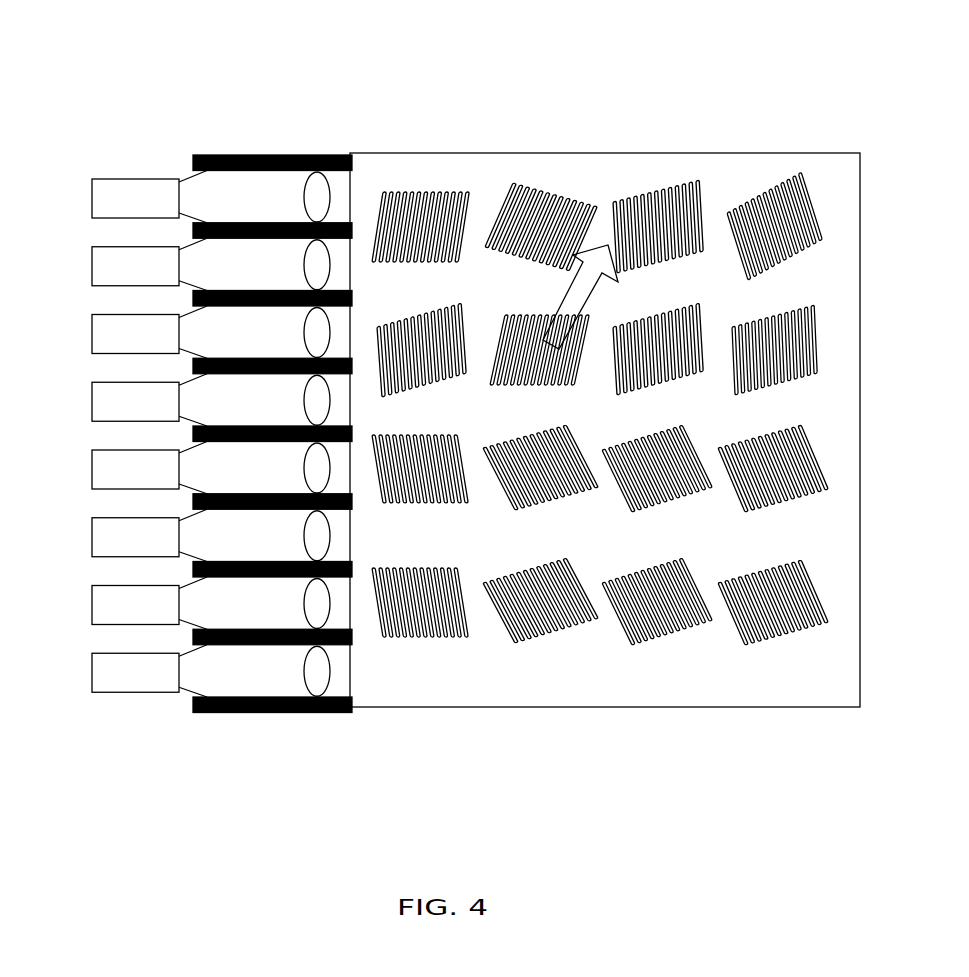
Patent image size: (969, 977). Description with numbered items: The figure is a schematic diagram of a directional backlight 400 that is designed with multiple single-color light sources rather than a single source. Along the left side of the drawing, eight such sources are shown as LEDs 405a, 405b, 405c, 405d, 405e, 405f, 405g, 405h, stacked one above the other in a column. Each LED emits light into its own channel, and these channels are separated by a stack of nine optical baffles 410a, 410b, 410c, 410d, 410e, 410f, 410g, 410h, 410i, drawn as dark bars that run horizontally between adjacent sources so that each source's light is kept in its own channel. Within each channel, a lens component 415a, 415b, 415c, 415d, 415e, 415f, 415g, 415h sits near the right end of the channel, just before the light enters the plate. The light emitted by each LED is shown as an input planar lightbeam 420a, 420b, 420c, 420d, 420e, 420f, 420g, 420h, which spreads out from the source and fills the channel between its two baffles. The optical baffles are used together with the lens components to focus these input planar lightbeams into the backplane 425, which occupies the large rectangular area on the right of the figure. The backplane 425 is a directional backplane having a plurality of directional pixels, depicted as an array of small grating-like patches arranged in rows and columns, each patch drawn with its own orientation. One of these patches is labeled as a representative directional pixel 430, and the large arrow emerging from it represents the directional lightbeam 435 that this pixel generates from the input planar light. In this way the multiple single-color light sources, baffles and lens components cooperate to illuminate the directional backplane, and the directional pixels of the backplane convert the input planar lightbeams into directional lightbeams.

The directional backlight 400 is at (437, 68).
The LED 405a is at (115, 179).
The LED 405b is at (115, 247).
The LED 405c is at (115, 314).
The LED 405d is at (115, 382).
The LED 405e is at (115, 450).
The LED 405f is at (115, 518).
The LED 405g is at (115, 586).
The LED 405h is at (115, 653).
The optical baffle 410a is at (298, 155).
The optical baffle 410b is at (297, 223).
The optical baffle 410c is at (297, 290).
The optical baffle 410d is at (297, 358).
The optical baffle 410e is at (297, 426).
The optical baffle 410f is at (297, 494).
The optical baffle 410g is at (297, 562).
The optical baffle 410h is at (297, 629).
The optical baffle 410i is at (297, 697).
The lens component 415a is at (325, 200).
The lens component 415b is at (323, 258).
The lens component 415c is at (324, 323).
The lens component 415d is at (318, 403).
The lens component 415e is at (323, 476).
The lens component 415f is at (325, 534).
The lens component 415g is at (325, 612).
The lens component 415h is at (325, 675).
The input planar lightbeam 420a is at (195, 190).
The input planar lightbeam 420b is at (195, 262).
The input planar lightbeam 420c is at (195, 330).
The input planar lightbeam 420d is at (195, 398).
The input planar lightbeam 420e is at (195, 466).
The input planar lightbeam 420f is at (195, 534).
The input planar lightbeam 420g is at (195, 602).
The input planar lightbeam 420h is at (195, 670).
The backplane 425 is at (535, 153).
The directional pixel 430 is at (532, 328).
The directional lightbeam 435 is at (587, 308).